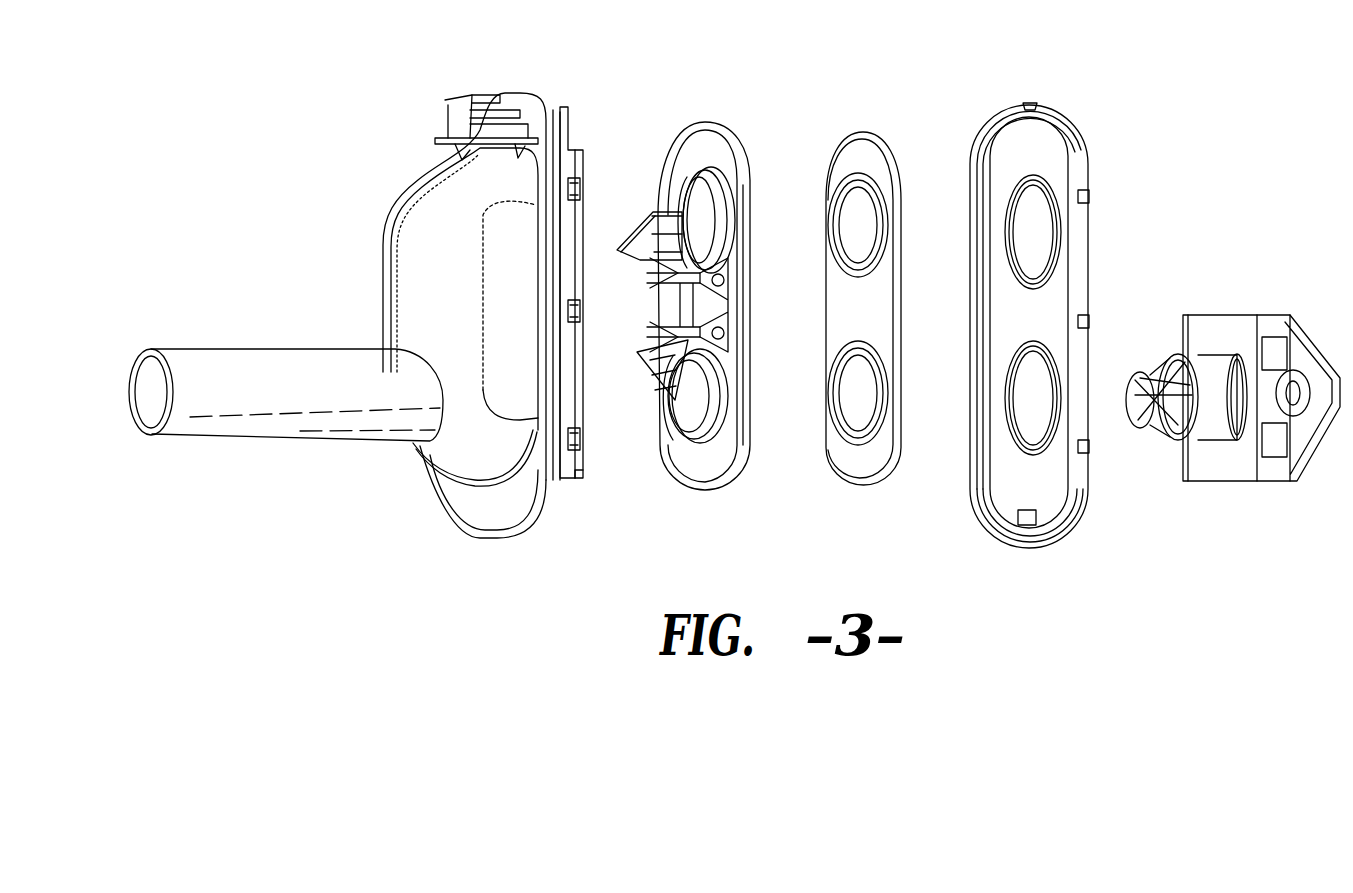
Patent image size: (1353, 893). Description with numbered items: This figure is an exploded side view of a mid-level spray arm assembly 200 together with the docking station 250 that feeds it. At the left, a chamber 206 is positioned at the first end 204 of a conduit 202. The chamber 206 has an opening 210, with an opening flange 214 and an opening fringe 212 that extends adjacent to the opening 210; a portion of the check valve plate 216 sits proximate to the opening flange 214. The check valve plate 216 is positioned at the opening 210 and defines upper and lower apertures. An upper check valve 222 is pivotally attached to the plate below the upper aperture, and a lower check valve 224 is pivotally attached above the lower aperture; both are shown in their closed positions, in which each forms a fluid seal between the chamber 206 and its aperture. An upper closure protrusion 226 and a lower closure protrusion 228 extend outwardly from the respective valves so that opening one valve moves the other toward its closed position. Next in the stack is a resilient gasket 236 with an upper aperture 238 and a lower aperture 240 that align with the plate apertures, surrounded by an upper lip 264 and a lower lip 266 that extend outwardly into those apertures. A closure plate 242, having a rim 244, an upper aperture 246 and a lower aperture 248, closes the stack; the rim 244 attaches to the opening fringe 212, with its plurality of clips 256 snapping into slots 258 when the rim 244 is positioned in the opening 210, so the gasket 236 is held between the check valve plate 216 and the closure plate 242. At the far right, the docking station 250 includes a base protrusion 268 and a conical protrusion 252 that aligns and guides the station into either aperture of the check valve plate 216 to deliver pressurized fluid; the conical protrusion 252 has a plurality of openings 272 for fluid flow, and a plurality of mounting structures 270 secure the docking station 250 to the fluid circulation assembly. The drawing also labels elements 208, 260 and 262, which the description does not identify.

The mid-level spray arm assembly 200 is at (290, 122).
The conduit 202 is at (283, 366).
The first end 204 is at (408, 385).
The chamber 206 is at (425, 222).
The clamp 208 is at (452, 138).
The opening 210 is at (605, 305).
The opening fringe 212 is at (578, 405).
The opening flange 214 is at (497, 515).
The check valve plate 216 is at (713, 279).
The upper check valve 222 is at (713, 180).
The lower check valve 224 is at (680, 430).
The upper closure protrusion 226 is at (700, 250).
The lower closure protrusion 228 is at (695, 370).
The gasket 236 is at (887, 313).
The upper aperture 238 is at (890, 178).
The lower aperture 240 is at (875, 451).
The closure plate 242 is at (1050, 312).
The rim 244 is at (1068, 140).
The upper aperture 246 is at (1040, 240).
The lower aperture 248 is at (1030, 405).
The docking station 250 is at (1221, 380).
The conical protrusion 252 is at (1160, 378).
The clips 256 is at (1028, 103).
The slots 258 is at (585, 192).
The frame outer wall 260 is at (692, 150).
The frame inner wall 262 is at (733, 135).
The upper lip 264 is at (843, 200).
The lower lip 266 is at (832, 430).
The base protrusion 268 is at (1205, 375).
The mounting structures 270 is at (1133, 412).
The openings 272 is at (1165, 368).